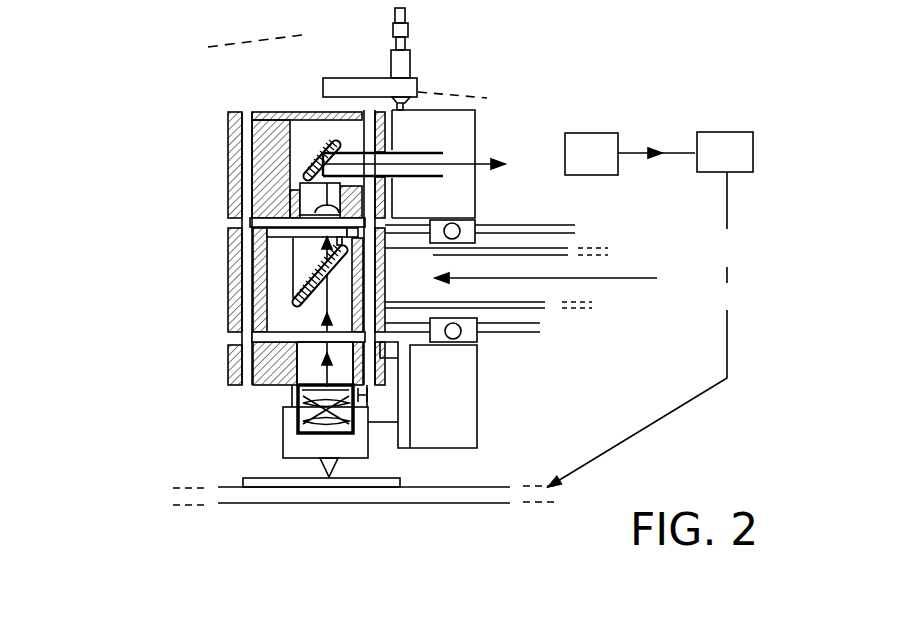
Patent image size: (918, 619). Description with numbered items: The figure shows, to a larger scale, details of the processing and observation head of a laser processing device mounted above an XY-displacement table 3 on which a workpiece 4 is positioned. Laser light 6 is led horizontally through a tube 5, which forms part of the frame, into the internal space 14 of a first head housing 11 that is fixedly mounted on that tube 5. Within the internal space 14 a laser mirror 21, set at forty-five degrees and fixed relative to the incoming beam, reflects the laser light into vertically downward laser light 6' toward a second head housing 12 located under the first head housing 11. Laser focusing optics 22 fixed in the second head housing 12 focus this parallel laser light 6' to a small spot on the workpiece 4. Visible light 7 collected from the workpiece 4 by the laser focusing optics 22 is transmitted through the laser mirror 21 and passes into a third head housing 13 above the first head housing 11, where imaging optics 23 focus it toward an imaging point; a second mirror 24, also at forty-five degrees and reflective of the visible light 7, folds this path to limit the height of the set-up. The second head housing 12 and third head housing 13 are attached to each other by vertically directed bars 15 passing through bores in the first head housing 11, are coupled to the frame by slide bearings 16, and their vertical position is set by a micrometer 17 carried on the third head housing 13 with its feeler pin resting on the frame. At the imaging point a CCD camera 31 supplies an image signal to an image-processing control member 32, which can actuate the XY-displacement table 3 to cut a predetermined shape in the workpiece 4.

The XY-displacement table 3 is at (485, 487).
The workpiece 4 is at (395, 475).
The tube 5 is at (495, 302).
The laser light 6 is at (531, 256).
The reflected laser light 6' is at (282, 384).
The visible light 7 is at (330, 237).
The first head housing 11 is at (230, 311).
The second head housing 12 is at (230, 371).
The third head housing 13 is at (228, 131).
The internal space 14 is at (262, 337).
The vertically directed bars 15 is at (245, 164).
The slide bearings 16 is at (245, 292).
The micrometer 17 is at (408, 25).
The laser mirror 21 is at (293, 298).
The laser focusing optics 22 is at (300, 432).
The imaging optics 23 is at (300, 205).
The second mirror 24 is at (316, 145).
The CCD camera 31 is at (590, 133).
The image-processing control member 32 is at (722, 132).